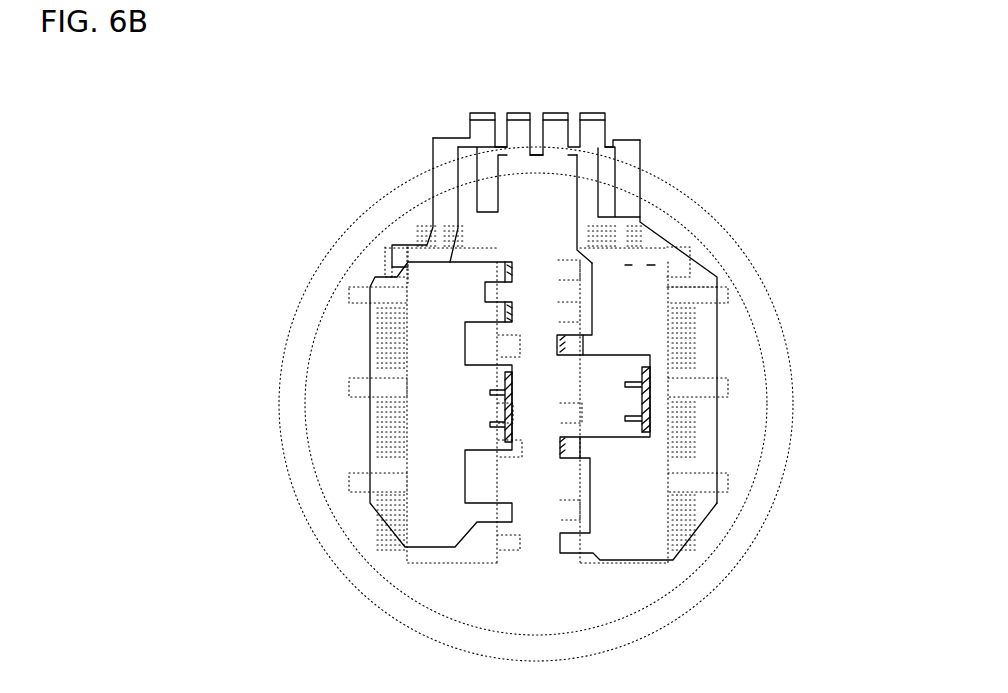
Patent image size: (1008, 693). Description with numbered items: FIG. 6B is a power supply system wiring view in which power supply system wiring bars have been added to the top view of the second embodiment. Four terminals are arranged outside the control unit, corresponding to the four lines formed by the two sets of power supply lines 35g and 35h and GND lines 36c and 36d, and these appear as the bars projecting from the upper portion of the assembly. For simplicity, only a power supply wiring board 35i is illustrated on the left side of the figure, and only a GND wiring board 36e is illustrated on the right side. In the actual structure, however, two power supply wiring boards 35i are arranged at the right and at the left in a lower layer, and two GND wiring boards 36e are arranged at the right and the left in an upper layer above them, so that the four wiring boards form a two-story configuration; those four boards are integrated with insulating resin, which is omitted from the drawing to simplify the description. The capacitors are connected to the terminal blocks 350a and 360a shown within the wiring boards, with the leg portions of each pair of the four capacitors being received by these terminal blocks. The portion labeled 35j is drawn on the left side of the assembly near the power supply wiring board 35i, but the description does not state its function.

The GND line 36c is at (503, 140).
The GND line 36d is at (597, 163).
The power supply line 35g is at (432, 152).
The power supply line 35h is at (641, 195).
The protrusion 35j is at (390, 245).
The power supply wiring board 35i is at (365, 332).
The GND wiring board 36e is at (715, 363).
The terminal block 350a is at (490, 392).
The terminal block 360a is at (651, 401).